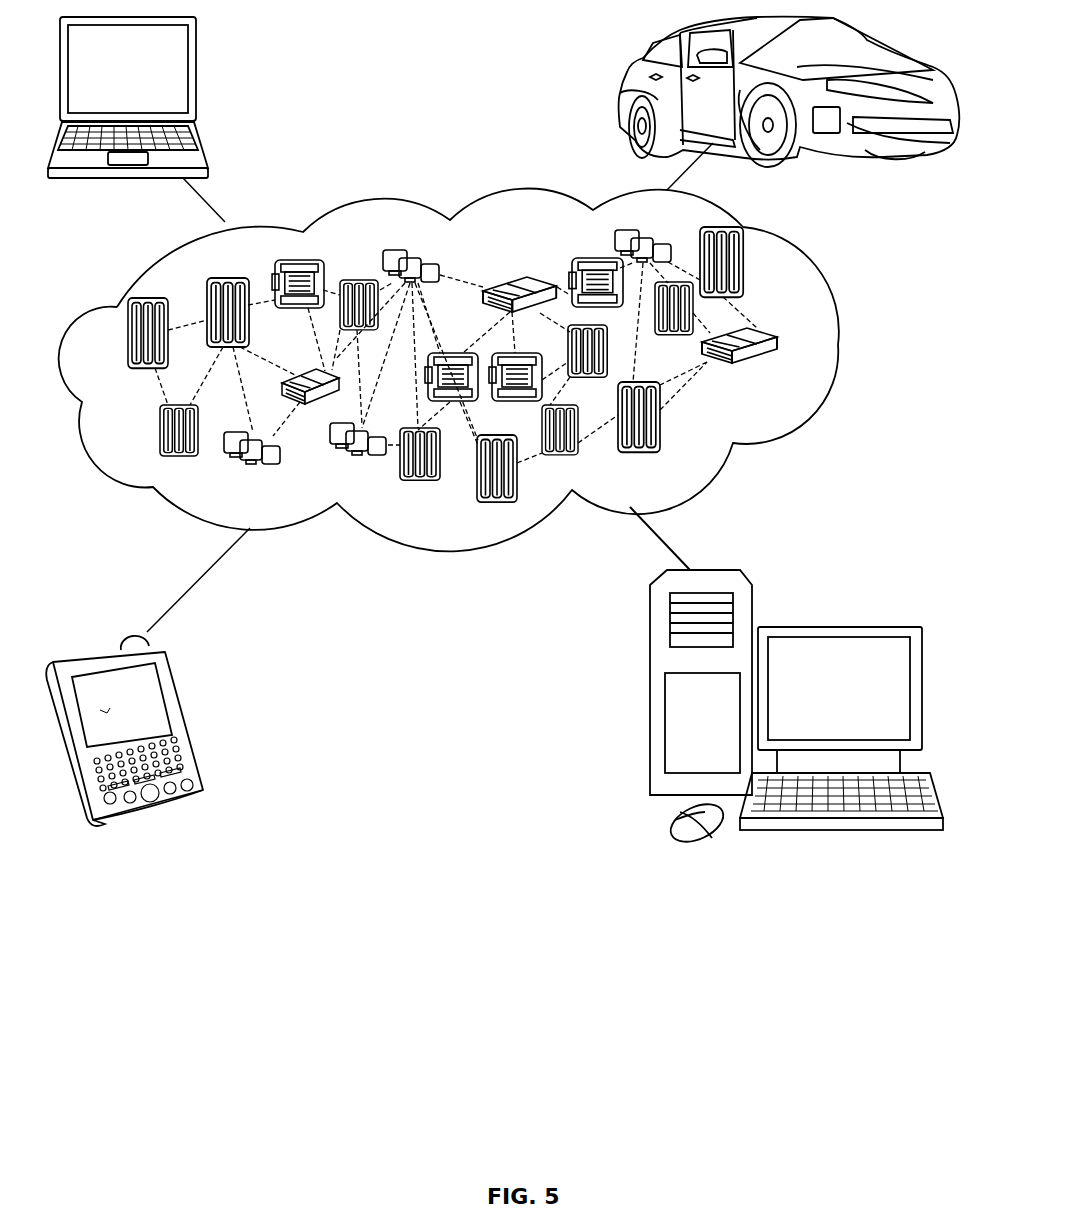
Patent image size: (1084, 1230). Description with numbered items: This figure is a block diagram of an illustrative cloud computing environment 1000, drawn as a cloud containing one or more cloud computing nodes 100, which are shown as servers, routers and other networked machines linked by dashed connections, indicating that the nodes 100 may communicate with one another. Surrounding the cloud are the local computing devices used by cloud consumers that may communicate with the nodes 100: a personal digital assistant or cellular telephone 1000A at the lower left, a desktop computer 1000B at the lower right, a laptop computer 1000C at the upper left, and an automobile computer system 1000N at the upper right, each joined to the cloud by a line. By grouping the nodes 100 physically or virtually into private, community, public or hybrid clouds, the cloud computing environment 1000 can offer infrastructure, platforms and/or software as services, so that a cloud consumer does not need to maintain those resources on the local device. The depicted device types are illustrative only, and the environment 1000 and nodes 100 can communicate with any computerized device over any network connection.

The cloud computing nodes 100 is at (830, 394).
The cloud computing environment 1000 is at (840, 343).
The personal digital assistant (PDA) or cellular telephone 1000A is at (185, 718).
The desktop computer 1000B is at (838, 627).
The laptop computer 1000C is at (198, 80).
The automobile computer system 1000N is at (620, 92).